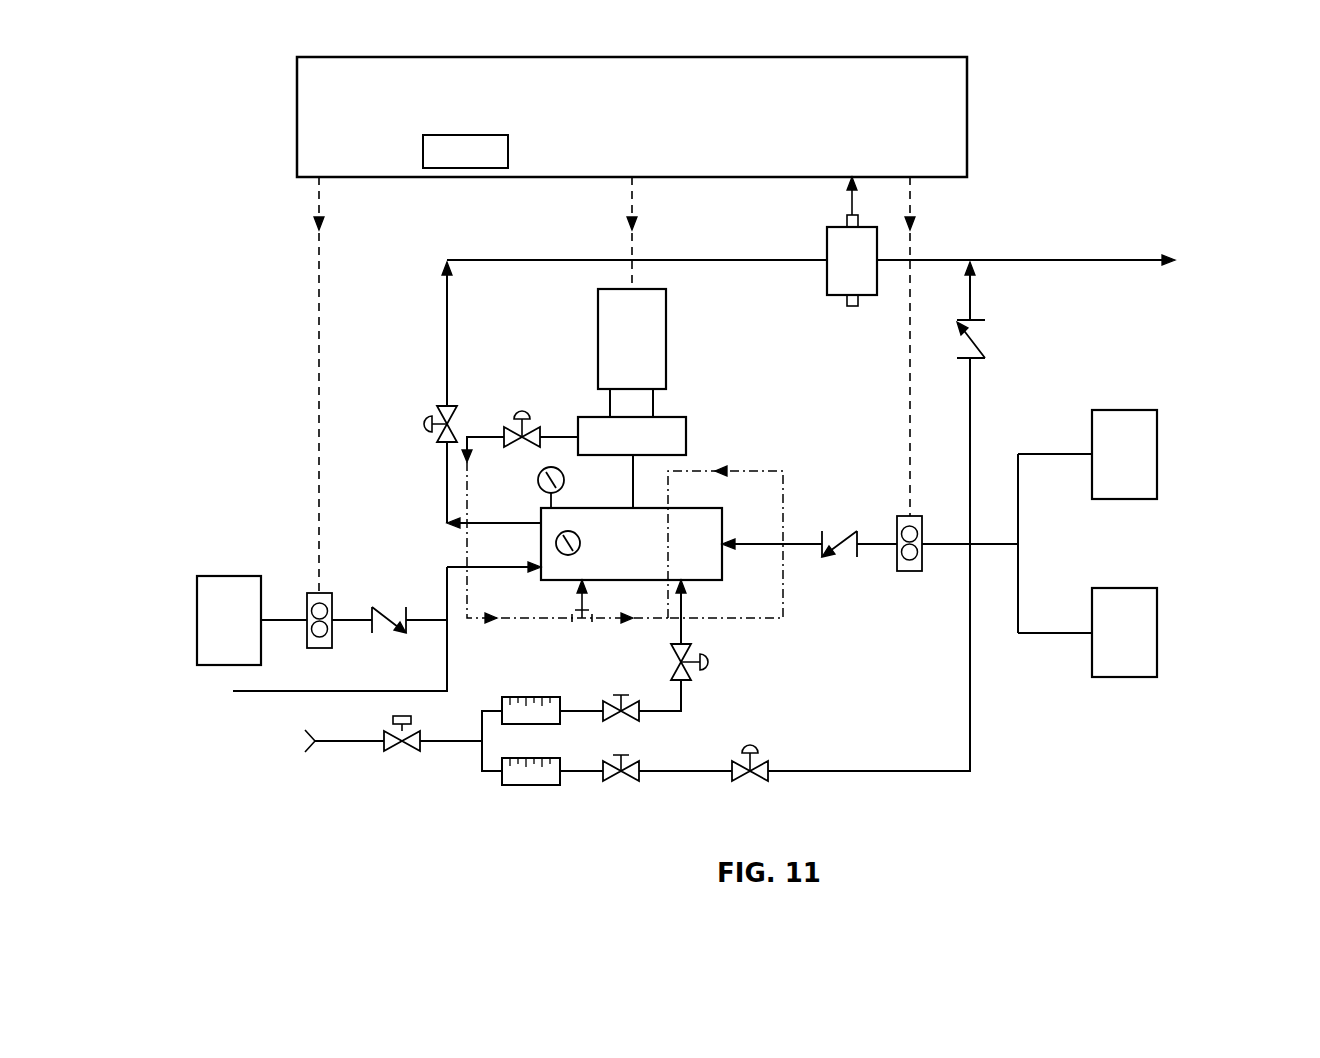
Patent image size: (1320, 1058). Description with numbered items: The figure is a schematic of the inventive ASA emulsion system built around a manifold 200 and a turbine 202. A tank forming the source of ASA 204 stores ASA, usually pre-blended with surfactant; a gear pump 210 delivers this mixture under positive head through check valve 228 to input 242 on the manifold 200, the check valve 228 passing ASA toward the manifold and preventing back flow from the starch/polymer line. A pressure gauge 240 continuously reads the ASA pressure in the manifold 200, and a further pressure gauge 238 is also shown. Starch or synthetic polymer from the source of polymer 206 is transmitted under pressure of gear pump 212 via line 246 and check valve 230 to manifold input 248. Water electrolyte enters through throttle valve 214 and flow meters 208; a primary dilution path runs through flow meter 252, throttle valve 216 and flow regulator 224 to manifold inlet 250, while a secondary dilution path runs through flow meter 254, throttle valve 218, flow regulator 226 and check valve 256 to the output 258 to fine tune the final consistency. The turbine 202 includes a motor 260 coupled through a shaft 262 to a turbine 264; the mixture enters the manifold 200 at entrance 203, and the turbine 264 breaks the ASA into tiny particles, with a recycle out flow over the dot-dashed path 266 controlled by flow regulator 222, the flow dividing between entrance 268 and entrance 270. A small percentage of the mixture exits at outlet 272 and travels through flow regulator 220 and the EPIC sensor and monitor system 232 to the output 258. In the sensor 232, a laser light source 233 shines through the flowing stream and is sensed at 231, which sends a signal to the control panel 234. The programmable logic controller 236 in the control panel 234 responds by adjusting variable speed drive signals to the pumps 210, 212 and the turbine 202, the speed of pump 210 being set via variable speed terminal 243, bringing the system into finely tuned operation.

The manifold 200 is at (631, 544).
The turbine 202 is at (649, 372).
The entrance 203 is at (633, 495).
The source of ASA 204 is at (240, 576).
The source of polymer 206 is at (1165, 543).
The flow meters 208 is at (613, 790).
The gear pump 210 is at (332, 640).
The gear pump 212 is at (906, 572).
The throttle valve 214 is at (385, 747).
The throttle valve 216 is at (620, 695).
The throttle valve 218 is at (640, 778).
The pressure controller 220 is at (430, 424).
The pressure controller 222 is at (522, 411).
The flow controller 224 is at (702, 664).
The flow controller 226 is at (752, 751).
The check valve 228 is at (404, 630).
The check valve 230 is at (836, 545).
The light sensing point 231 is at (847, 221).
The EPIC sensor and monitor system 232 is at (827, 252).
The light source 233 is at (848, 307).
The control panel 234 is at (967, 118).
The programmable logic controller 236 is at (490, 135).
The pressure gauge 238 is at (538, 480).
The pressure gauge 240 is at (580, 545).
The input 242 is at (298, 692).
The variable speed terminal 243 is at (333, 178).
The line 246 is at (952, 543).
The manifold input 248 is at (753, 548).
The manifold inlet 250 is at (684, 613).
The flow meter 252 is at (523, 697).
The flow meter 254 is at (530, 759).
The check valve 256 is at (978, 348).
The output 258 is at (1105, 260).
The motor 260 is at (632, 339).
The shaft 262 is at (610, 406).
The turbine 264 is at (665, 418).
The recycle path 266 is at (465, 496).
The entrance 268 is at (588, 603).
The entrance 270 is at (670, 478).
The outlet 272 is at (485, 524).